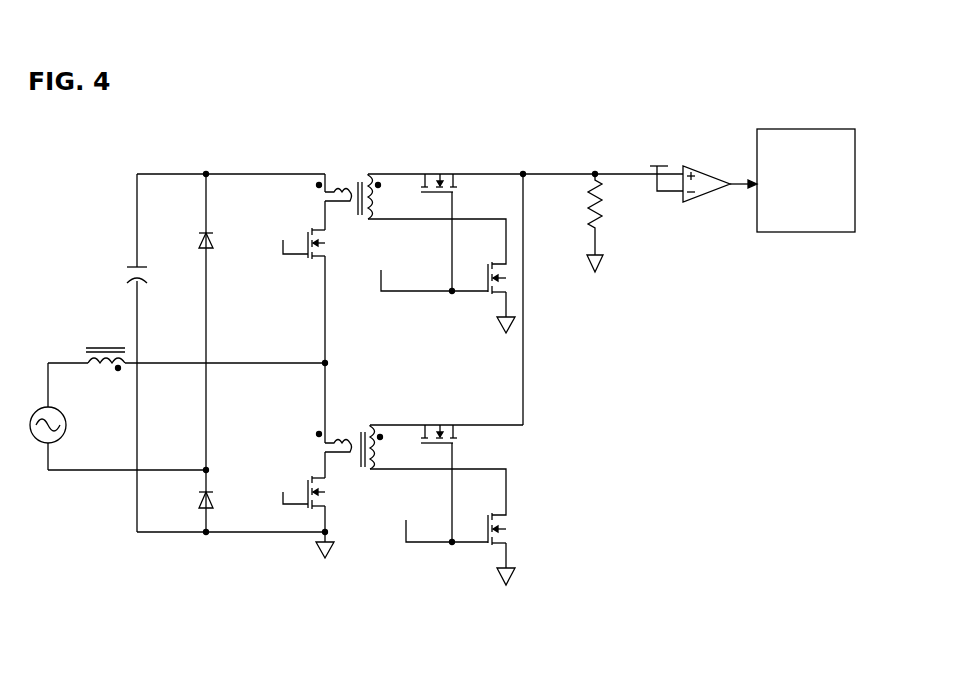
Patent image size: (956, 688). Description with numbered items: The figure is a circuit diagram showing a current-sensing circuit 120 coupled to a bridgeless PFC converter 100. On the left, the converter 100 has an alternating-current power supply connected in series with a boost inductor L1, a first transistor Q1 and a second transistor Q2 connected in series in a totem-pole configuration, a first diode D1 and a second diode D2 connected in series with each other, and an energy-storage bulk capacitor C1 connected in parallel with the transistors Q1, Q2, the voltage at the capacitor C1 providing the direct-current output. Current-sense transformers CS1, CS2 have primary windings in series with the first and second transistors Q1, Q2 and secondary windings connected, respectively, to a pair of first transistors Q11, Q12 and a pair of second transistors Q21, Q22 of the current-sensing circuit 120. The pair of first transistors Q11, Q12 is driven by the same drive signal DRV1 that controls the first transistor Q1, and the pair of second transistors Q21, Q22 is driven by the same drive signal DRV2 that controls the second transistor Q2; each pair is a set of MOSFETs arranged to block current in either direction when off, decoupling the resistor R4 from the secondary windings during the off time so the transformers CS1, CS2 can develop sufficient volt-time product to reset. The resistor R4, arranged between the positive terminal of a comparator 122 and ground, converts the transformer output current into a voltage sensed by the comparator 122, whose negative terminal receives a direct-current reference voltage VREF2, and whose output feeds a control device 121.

The bridgeless PFC converter 100 is at (53, 598).
The current-sensing circuit 120 is at (367, 598).
The control device 121 is at (806, 165).
The comparator 122 is at (720, 174).
The capacitor C1 is at (123, 277).
The first diode D1 is at (219, 241).
The second diode D2 is at (219, 501).
The boost inductor L1 is at (105, 370).
The first transistor Q1 is at (308, 295).
The second transistor Q2 is at (315, 517).
The current-sense transformer CS1 is at (361, 185).
The current-sense transformer CS2 is at (364, 435).
The first transistor Q11 is at (439, 219).
The first transistor Q12 is at (490, 287).
The second transistor Q21 is at (439, 468).
The second transistor Q22 is at (492, 538).
The resistor R4 is at (609, 223).
The drive signal DRV1 is at (424, 271).
The drive signal DRV2 is at (434, 521).
The reference voltage VREF2 is at (651, 165).